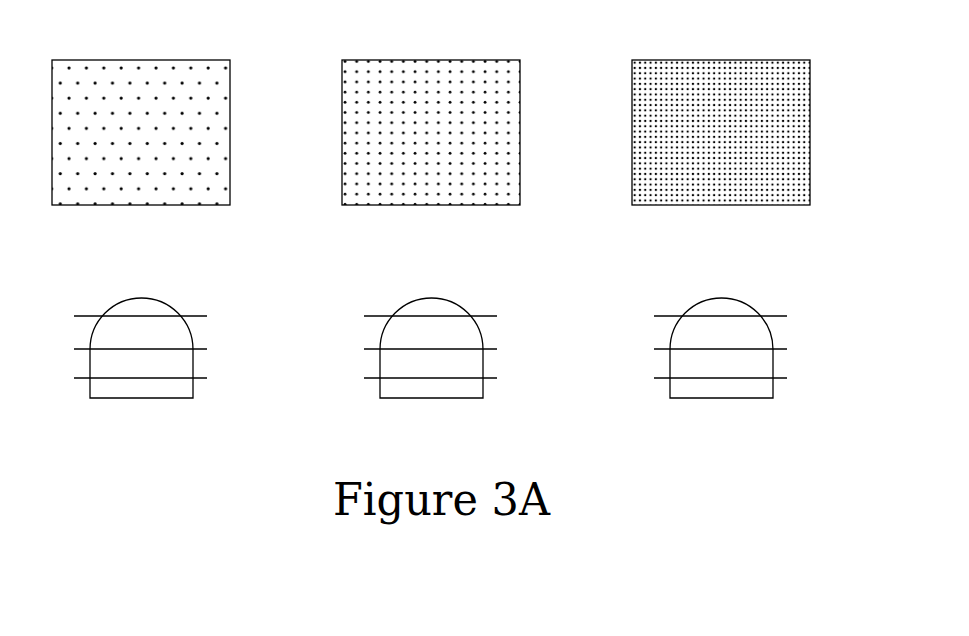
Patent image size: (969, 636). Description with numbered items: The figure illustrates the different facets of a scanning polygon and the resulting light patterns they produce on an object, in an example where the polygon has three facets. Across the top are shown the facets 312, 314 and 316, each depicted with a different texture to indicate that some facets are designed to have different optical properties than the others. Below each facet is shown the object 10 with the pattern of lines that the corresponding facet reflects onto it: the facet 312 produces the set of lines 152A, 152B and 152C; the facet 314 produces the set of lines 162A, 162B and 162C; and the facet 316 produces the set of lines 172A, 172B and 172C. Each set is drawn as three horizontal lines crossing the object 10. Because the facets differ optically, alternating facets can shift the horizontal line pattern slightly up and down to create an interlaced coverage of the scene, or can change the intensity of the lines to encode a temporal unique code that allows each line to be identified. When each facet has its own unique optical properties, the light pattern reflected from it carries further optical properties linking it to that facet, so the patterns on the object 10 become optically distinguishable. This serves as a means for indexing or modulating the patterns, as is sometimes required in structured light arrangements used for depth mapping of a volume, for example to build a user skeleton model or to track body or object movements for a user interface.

The facet 312 is at (127, 60).
The facet 314 is at (417, 60).
The facet 316 is at (707, 60).
The object 10 is at (125, 302).
The line 152A is at (193, 316).
The line 152B is at (193, 349).
The line 152C is at (193, 378).
The line 162A is at (483, 316).
The line 162B is at (483, 349).
The line 162C is at (483, 378).
The line 172A is at (773, 316).
The line 172B is at (773, 349).
The line 172C is at (773, 378).